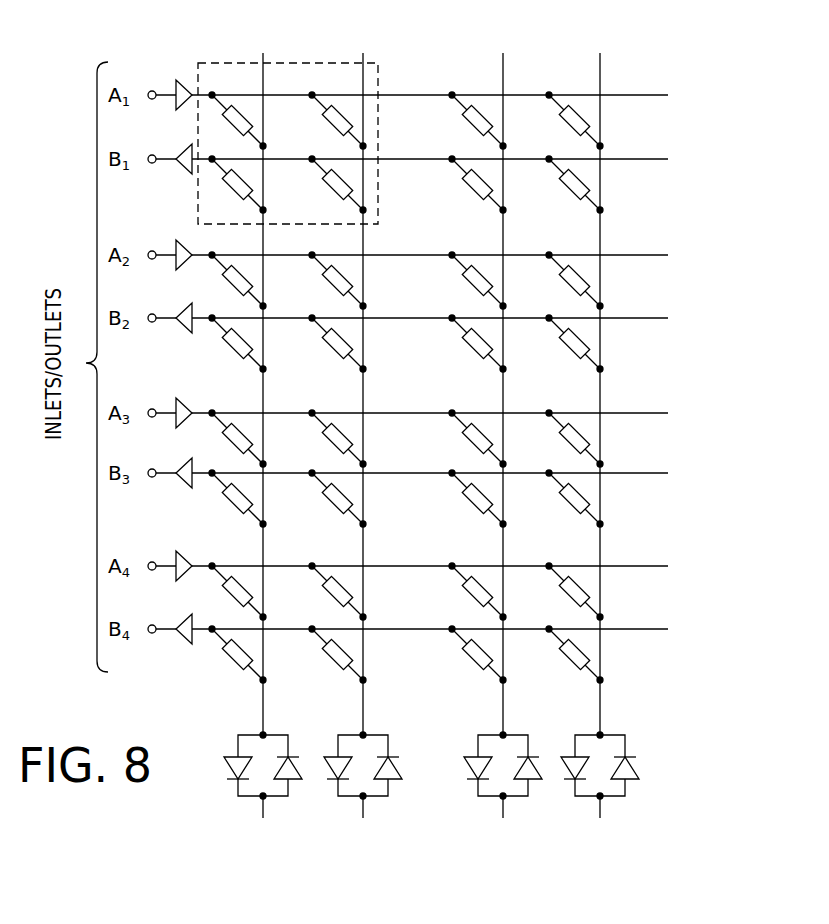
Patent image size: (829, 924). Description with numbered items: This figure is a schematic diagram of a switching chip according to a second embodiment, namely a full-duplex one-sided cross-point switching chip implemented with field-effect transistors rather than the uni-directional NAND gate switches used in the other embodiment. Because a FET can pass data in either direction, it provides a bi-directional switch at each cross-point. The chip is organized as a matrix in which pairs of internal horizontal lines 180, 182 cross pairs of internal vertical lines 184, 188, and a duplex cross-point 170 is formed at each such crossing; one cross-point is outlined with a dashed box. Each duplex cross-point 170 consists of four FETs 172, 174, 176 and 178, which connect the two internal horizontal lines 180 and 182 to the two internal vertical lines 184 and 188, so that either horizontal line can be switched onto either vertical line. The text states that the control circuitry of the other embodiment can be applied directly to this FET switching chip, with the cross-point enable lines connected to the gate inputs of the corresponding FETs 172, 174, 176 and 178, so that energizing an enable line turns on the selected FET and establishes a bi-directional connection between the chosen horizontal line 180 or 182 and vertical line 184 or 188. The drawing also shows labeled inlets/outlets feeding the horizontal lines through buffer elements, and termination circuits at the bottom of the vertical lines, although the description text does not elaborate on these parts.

The duplex cross-point 170 is at (289, 117).
The FET 172 is at (238, 112).
The FET 174 is at (337, 112).
The FET 176 is at (232, 190).
The FET 178 is at (343, 190).
The internal horizontal line 180 is at (418, 93).
The internal horizontal line 182 is at (420, 158).
The internal vertical line 184 is at (265, 268).
The vertical line 188 is at (365, 268).